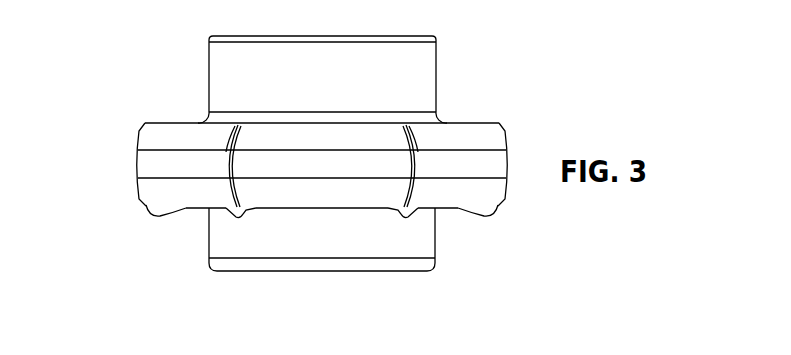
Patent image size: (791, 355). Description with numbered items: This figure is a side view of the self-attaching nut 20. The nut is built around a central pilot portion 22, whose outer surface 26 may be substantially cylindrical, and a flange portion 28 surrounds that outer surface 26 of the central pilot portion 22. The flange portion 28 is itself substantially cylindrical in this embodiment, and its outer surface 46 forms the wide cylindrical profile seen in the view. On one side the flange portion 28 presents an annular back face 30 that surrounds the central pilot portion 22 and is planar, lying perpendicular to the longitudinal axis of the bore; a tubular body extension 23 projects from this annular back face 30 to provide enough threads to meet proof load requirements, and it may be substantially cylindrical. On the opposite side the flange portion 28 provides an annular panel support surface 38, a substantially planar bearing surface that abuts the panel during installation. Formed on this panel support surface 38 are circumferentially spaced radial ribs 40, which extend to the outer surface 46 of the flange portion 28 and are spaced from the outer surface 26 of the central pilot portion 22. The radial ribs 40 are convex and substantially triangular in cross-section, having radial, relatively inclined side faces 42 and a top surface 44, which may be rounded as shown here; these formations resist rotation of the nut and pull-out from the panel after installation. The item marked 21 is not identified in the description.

The self-attaching nut 20 is at (186, 62).
The component 21 is at (575, 3).
The central pilot portion 22 is at (437, 242).
The tubular body extension 23 is at (437, 71).
The outer surface 26 is at (218, 244).
The flange portion 28 is at (507, 163).
The annular back face 30 is at (170, 118).
The annular panel support surface 38 is at (320, 209).
The radial ribs 40 is at (161, 214).
The inclined side faces 42 is at (247, 211).
The top surface 44 is at (233, 214).
The outer surface 46 is at (157, 165).